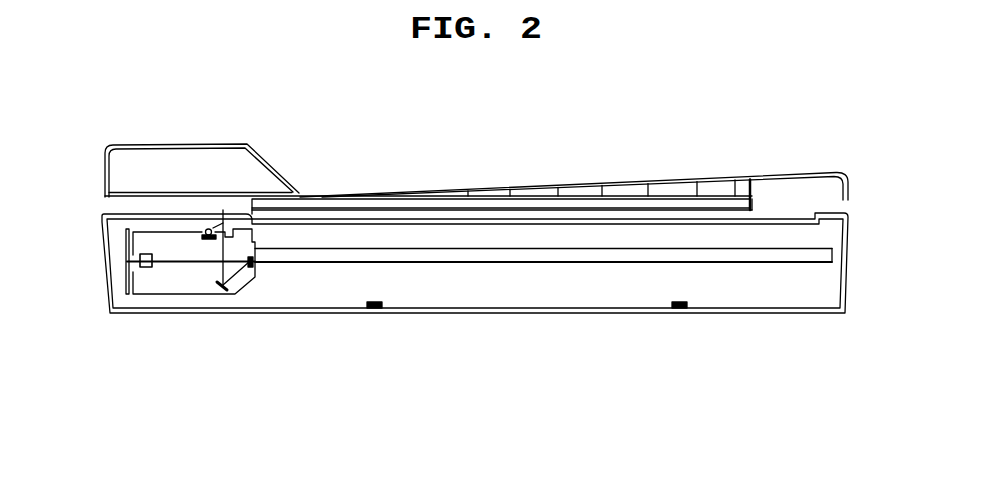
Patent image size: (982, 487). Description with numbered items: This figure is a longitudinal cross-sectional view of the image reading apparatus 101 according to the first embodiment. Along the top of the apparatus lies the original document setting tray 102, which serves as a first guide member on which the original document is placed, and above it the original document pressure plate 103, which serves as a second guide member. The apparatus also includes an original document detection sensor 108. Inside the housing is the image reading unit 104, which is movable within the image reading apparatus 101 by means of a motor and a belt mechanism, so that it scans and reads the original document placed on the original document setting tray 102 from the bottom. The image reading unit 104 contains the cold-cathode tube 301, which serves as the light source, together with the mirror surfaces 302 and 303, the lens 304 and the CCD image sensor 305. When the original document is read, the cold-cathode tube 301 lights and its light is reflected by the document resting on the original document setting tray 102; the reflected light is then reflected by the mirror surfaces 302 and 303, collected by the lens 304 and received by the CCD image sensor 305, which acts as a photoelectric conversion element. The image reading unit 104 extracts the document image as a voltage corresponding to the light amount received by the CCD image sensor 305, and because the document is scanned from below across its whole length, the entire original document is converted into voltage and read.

The image reading apparatus 101 is at (808, 128).
The original document setting tray 102 is at (565, 225).
The original document pressure plate 103 is at (373, 192).
The image reading unit 104 is at (246, 287).
The original document detection sensor 108 is at (373, 308).
The cold-cathode tube 301 is at (208, 229).
The mirror surface 302 is at (218, 289).
The mirror surface 303 is at (254, 268).
The lens 304 is at (152, 268).
The CCD image sensor 305 is at (132, 270).